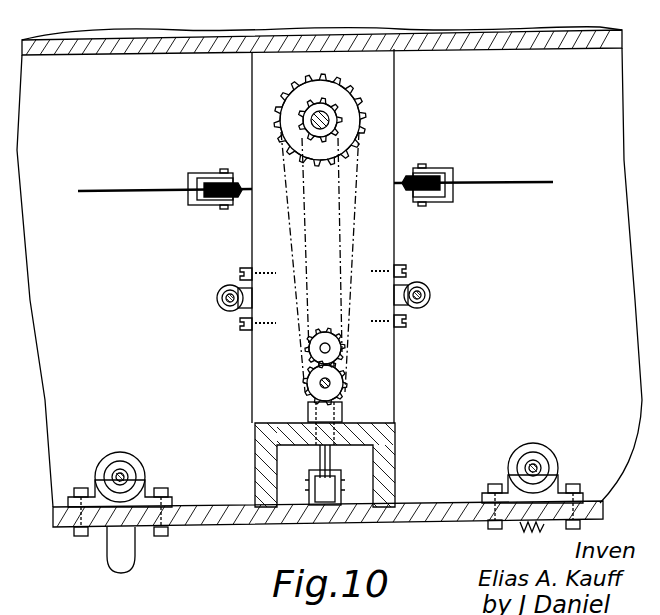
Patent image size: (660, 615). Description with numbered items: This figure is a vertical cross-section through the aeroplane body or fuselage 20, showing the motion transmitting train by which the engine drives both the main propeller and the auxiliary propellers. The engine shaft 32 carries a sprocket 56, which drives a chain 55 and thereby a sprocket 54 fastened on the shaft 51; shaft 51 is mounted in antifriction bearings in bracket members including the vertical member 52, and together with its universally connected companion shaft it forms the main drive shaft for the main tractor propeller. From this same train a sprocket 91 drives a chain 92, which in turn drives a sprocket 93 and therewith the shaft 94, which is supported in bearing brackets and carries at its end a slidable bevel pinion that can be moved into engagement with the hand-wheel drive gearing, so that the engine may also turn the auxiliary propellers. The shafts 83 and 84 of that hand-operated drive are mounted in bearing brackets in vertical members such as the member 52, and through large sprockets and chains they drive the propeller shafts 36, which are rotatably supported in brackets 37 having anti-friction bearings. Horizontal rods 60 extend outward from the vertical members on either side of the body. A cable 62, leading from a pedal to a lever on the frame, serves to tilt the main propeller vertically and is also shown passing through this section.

The body or fuselage 20 is at (420, 524).
The engine shaft 32 is at (333, 345).
The propeller shaft 36 is at (118, 463).
The bracket 37 is at (140, 477).
The shaft 51 is at (328, 113).
The bracket member 52 is at (385, 87).
The sprocket 54 is at (348, 118).
The chain 55 is at (360, 158).
The sprocket 56 is at (327, 330).
The rod 60 is at (123, 193).
The cable 62 is at (330, 455).
The shaft 83 is at (218, 308).
The shaft 84 is at (430, 295).
The sprocket 91 is at (313, 116).
The chain 92 is at (298, 172).
The sprocket 93 is at (303, 384).
The shaft 94 is at (331, 383).